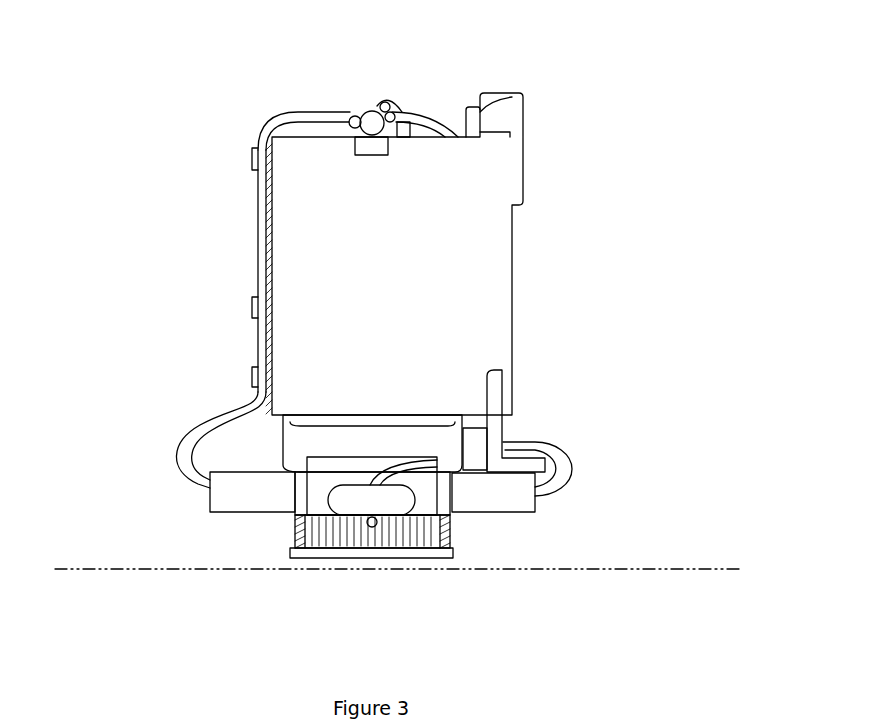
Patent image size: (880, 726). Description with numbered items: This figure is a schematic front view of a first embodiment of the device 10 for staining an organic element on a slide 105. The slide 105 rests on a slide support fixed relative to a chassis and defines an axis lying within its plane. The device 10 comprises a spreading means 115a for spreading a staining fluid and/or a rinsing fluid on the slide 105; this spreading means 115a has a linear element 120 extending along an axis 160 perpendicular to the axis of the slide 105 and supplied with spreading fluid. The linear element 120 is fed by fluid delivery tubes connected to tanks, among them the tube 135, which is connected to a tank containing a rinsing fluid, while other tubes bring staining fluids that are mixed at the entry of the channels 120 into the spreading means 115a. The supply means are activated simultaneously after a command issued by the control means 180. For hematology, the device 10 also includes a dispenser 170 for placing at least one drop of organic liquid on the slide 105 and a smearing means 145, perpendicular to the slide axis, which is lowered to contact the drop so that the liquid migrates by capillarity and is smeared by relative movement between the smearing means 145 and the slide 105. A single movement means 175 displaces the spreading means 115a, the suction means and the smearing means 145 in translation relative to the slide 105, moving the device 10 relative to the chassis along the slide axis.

The device 10 is at (203, 96).
The slide 105 is at (452, 560).
The spreading means 115a is at (452, 533).
The linear element 120 is at (325, 534).
The tube 135 is at (463, 450).
The smearing means 145 is at (318, 495).
The axis 160 is at (692, 569).
The dispenser 170 is at (523, 465).
The movement means 175 is at (472, 113).
The control means 180 is at (510, 122).